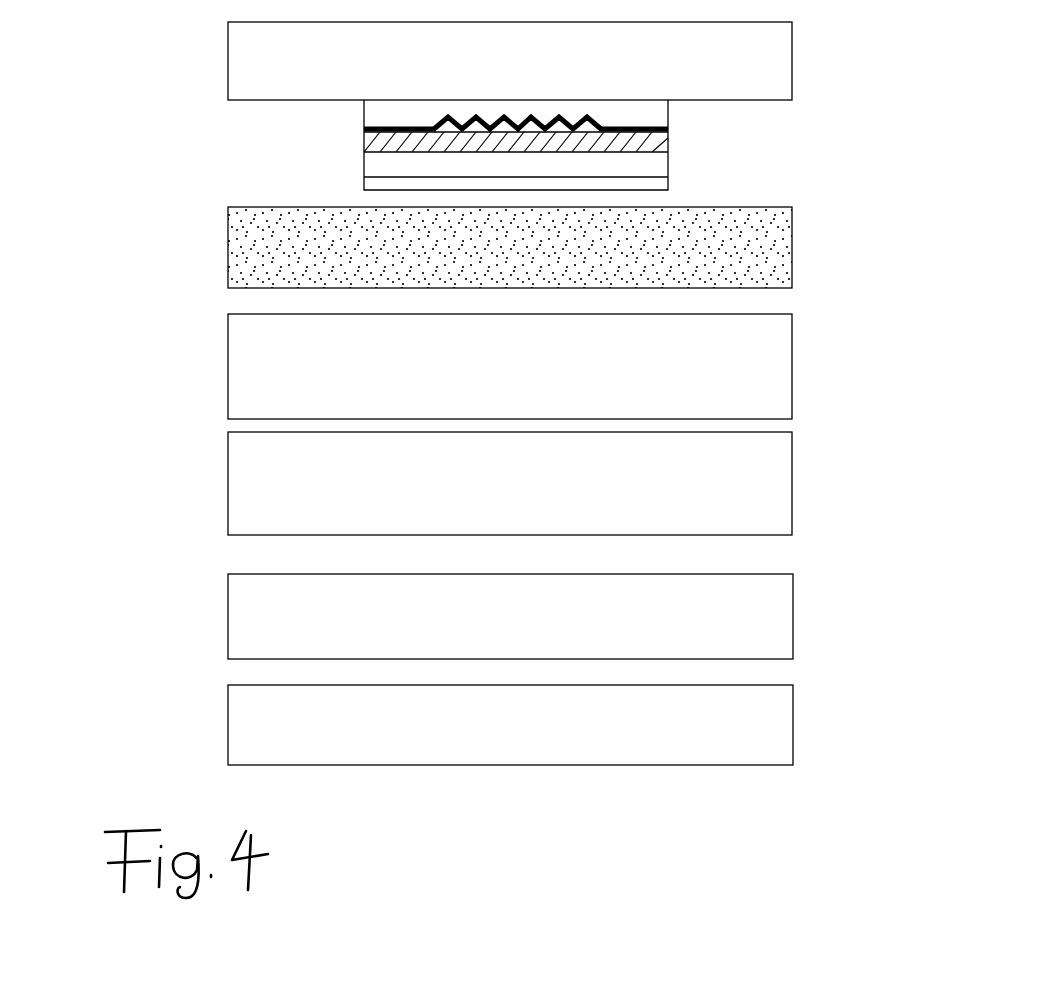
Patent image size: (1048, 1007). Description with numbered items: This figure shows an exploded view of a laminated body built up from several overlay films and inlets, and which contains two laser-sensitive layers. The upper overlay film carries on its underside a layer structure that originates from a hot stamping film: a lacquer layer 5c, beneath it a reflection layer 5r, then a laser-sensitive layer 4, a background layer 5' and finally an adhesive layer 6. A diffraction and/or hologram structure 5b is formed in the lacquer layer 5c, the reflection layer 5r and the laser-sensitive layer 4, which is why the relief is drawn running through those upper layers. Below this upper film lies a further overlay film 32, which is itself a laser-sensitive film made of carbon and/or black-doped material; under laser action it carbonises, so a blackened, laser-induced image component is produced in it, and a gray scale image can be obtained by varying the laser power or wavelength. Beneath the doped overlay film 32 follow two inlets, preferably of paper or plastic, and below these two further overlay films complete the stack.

The overlay film 32 is at (750, 245).
The laser-sensitive layer 4 is at (668, 143).
The background layer 5' is at (671, 145).
The diffraction and/or hologram structure 5b is at (559, 112).
The lacquer layer 5c is at (378, 117).
The reflection layer 5r is at (613, 130).
The adhesive layer 6 is at (650, 187).